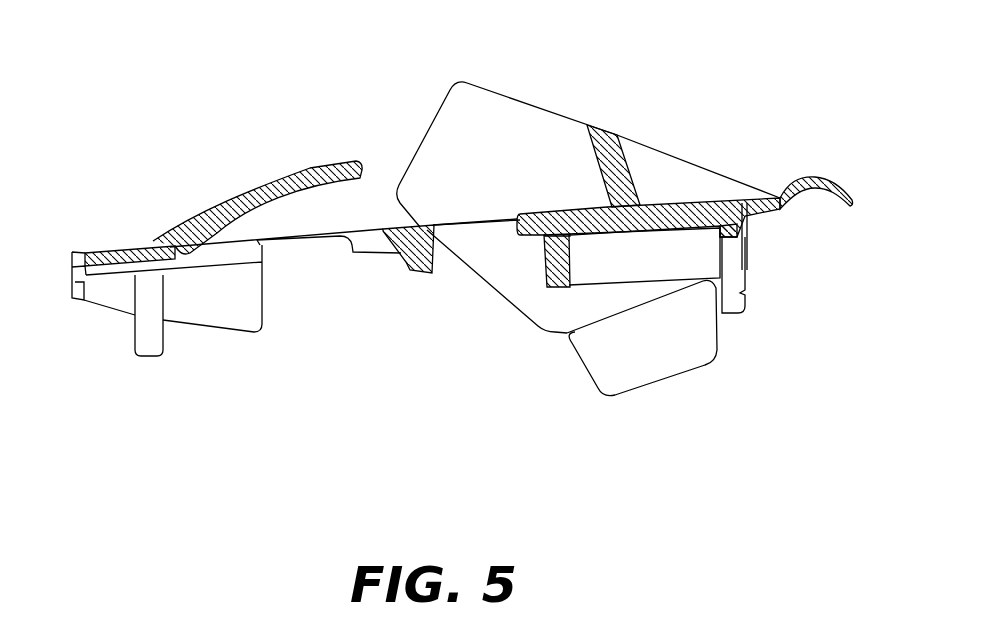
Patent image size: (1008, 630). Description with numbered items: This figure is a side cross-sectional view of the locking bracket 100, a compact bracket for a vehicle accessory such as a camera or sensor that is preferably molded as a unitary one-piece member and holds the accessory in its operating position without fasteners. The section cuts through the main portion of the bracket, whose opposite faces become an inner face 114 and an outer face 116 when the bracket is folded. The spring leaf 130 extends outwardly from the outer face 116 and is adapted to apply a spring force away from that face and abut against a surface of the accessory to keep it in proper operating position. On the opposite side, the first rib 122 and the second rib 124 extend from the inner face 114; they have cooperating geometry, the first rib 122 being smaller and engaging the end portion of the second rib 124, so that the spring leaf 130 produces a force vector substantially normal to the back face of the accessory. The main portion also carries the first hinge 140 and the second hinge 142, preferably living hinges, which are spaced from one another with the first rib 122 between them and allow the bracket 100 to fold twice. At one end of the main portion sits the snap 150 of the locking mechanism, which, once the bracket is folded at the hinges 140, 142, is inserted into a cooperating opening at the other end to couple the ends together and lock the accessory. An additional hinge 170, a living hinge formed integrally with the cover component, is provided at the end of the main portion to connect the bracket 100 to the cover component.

The locking bracket 100 is at (692, 107).
The inner face 114 is at (117, 272).
The outer face 116 is at (110, 250).
The first rib 122 is at (409, 274).
The second rib 124 is at (183, 326).
The spring leaf 130 is at (311, 164).
The first hinge 140 is at (478, 232).
The second hinge 142 is at (288, 249).
The snap 150 is at (750, 306).
The additional hinge 170 is at (835, 180).